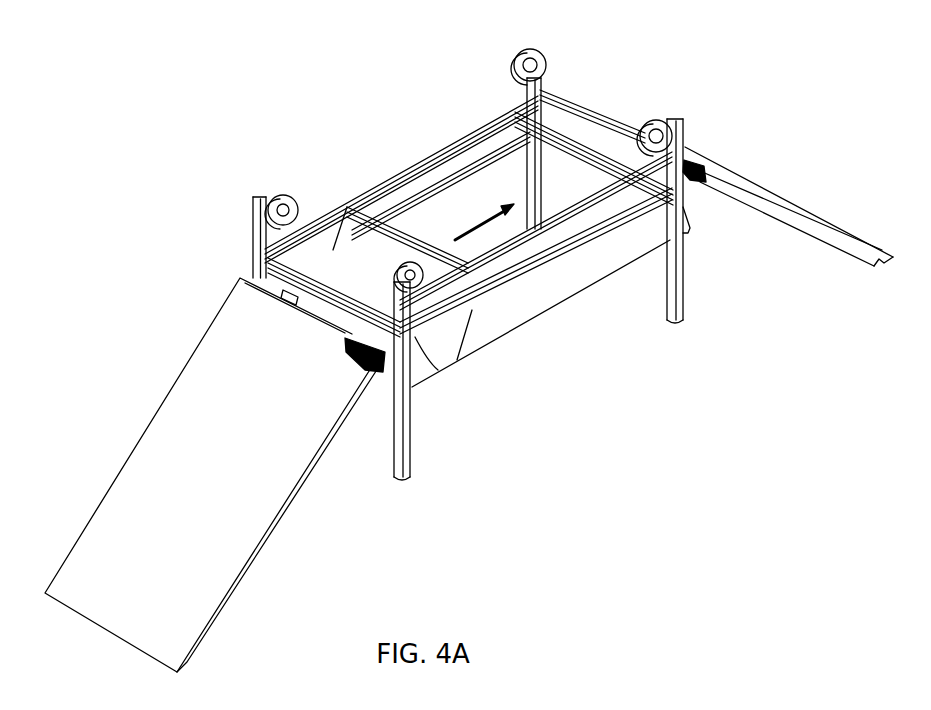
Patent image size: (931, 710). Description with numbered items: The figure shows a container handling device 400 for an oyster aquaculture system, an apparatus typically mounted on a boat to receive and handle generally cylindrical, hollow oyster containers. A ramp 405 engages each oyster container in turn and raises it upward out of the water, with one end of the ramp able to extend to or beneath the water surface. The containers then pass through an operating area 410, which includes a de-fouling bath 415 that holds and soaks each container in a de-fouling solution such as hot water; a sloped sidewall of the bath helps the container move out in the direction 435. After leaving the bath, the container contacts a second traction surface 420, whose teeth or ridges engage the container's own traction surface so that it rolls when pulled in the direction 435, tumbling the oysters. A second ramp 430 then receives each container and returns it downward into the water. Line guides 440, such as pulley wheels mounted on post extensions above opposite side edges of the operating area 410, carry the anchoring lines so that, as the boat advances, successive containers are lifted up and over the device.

The container handling device 400 is at (87, 197).
The ramp 405 is at (182, 480).
The operating area 410 is at (560, 295).
The de-fouling bath 415 is at (317, 253).
The second traction surface 420 is at (595, 207).
The second ramp 430 is at (753, 180).
The direction 435 is at (481, 218).
The line guides 440 is at (296, 185).